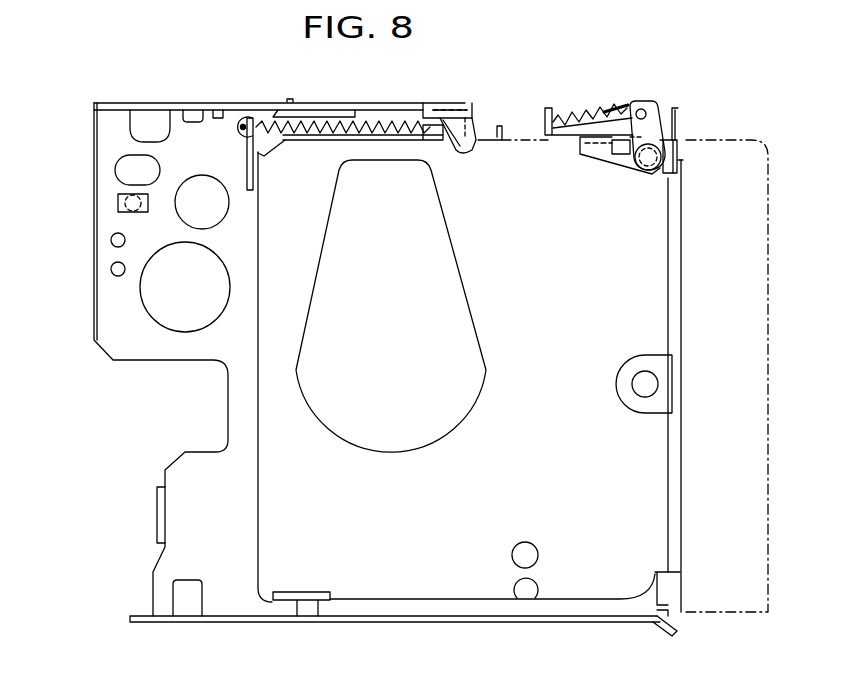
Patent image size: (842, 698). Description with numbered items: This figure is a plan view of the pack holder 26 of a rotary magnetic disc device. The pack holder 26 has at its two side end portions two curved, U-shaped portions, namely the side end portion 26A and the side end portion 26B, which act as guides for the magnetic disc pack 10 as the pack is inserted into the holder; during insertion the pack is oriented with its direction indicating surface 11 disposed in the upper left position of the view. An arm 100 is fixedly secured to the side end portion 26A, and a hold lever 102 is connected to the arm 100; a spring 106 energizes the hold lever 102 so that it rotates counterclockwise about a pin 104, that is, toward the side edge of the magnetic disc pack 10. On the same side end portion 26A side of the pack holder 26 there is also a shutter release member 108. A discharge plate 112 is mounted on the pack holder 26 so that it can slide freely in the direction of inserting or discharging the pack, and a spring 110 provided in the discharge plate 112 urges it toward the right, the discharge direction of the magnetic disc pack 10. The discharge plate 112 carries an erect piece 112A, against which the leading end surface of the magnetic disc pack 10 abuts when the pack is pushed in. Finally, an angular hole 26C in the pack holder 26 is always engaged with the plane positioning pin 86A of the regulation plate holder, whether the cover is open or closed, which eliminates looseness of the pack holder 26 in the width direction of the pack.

The magnetic disc pack 10 is at (706, 152).
The direction indicating surface 11 is at (258, 151).
The pack holder 26 is at (650, 487).
The side end portion 26A is at (603, 156).
The side end portion 26B is at (566, 612).
The angular hole 26C is at (120, 201).
The plane positioning pin 86A is at (119, 211).
The arm 100 is at (668, 117).
The hold lever 102 is at (578, 113).
The pin 104 is at (648, 128).
The spring 106 is at (598, 104).
The shutter release member 108 is at (462, 118).
The spring 110 is at (334, 122).
The discharge plate 112 is at (312, 110).
The erect piece 112A is at (248, 163).